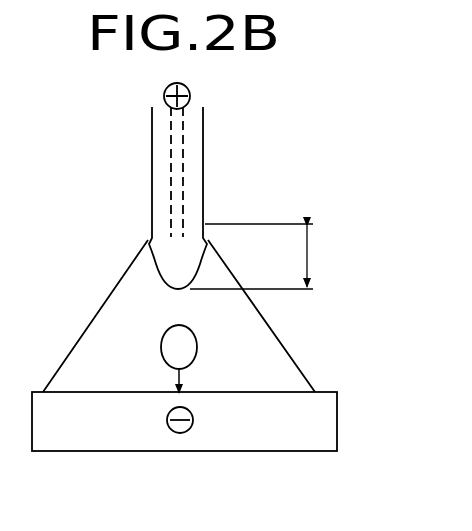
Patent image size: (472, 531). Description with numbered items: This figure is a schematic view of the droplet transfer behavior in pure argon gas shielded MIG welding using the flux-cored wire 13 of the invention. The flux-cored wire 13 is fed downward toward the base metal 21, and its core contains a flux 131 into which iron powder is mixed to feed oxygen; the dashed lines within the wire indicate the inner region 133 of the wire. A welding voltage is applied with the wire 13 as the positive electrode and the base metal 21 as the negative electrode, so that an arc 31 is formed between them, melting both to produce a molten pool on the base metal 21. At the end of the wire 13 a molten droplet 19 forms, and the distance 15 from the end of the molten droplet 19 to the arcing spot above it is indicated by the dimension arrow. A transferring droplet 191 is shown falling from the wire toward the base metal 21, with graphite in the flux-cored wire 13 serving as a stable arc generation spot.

The flux-cored wire 13 is at (170, 198).
The inner channel of nozzle 133 is at (203, 160).
The flux 131 is at (172, 196).
The molten droplet 19 is at (187, 258).
The distance 15 is at (308, 255).
The arc 31 is at (273, 368).
The base metal 21 is at (122, 433).
The droplet 191 is at (162, 340).